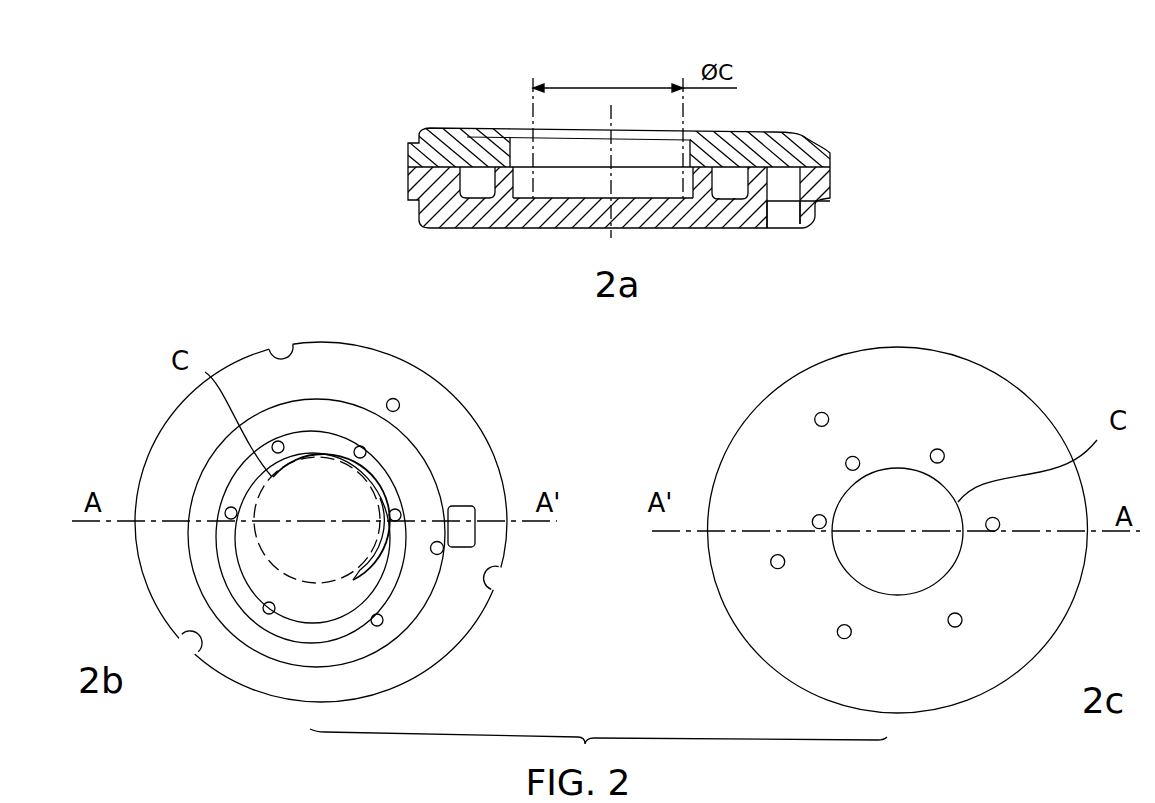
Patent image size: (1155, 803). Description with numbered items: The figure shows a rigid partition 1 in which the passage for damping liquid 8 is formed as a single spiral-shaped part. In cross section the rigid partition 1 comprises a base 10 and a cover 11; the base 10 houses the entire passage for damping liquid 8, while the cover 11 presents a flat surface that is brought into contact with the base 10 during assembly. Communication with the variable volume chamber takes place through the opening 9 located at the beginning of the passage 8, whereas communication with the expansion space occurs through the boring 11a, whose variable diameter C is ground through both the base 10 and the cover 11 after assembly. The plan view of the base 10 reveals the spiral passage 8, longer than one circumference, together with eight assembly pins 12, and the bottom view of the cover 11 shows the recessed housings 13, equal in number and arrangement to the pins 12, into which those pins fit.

In FIG. 2a, the rigid partition 1 is at (872, 228).
In FIG. 2a, the passage for damping liquid 8 is at (480, 180).
In FIG. 2b, the passage for damping liquid 8 is at (253, 625).
In FIG. 2a, the opening 9 is at (785, 215).
In FIG. 2b, the opening 9 is at (467, 532).
In FIG. 2a, the base 10 is at (707, 213).
In FIG. 2b, the base 10 is at (467, 458).
In FIG. 2a, the cover 11 is at (790, 145).
In FIG. 2c, the cover 11 is at (997, 410).
In FIG. 2c, the boring 11a is at (927, 542).
In FIG. 2b, the assembly pins 12 is at (393, 399).
In FIG. 2c, the recessed housings 13 is at (958, 626).